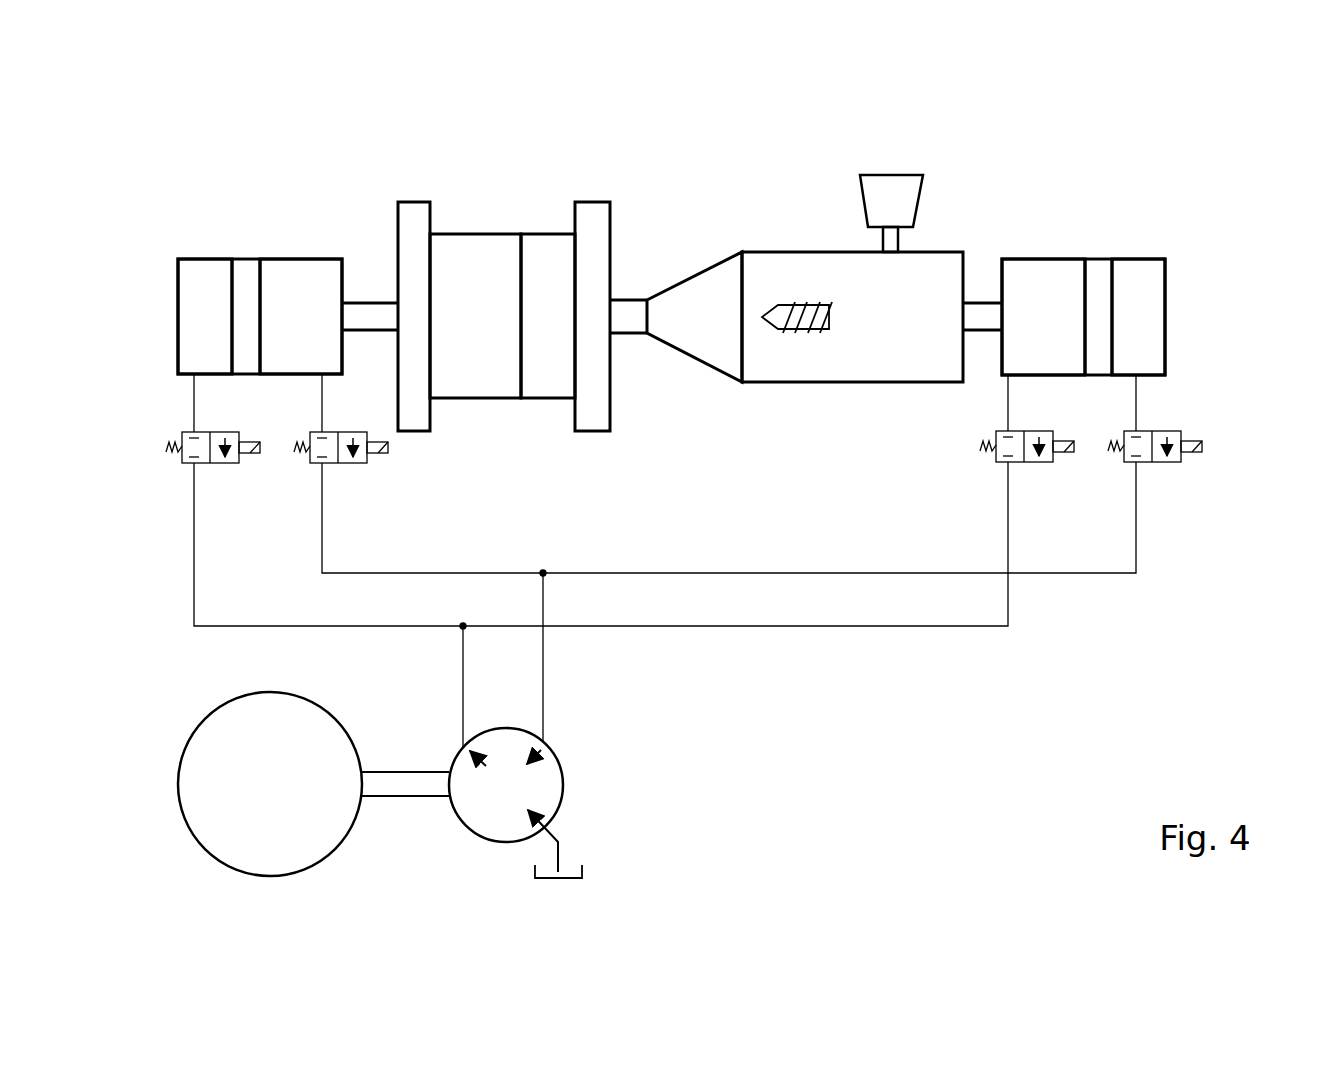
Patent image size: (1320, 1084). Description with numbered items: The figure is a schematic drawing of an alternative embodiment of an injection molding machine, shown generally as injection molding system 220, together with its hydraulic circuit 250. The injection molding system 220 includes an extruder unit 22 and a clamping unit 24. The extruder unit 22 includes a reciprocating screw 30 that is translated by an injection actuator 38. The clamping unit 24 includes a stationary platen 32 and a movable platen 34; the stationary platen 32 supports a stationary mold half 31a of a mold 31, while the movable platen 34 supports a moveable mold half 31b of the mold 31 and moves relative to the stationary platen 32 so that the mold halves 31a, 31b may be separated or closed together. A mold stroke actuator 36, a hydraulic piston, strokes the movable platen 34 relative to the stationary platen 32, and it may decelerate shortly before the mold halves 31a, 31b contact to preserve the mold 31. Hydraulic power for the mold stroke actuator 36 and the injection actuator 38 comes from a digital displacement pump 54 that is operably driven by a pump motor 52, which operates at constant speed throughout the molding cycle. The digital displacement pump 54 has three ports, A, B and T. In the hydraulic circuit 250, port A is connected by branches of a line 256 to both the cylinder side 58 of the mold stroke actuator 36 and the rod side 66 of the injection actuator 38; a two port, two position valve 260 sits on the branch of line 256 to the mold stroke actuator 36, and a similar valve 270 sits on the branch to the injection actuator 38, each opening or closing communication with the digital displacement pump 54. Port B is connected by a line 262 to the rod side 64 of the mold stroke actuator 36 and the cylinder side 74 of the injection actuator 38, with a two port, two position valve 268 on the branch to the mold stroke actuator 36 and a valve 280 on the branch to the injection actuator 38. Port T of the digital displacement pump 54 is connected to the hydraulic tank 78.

The injection molding system 220 is at (204, 168).
The clamping unit 24 is at (397, 163).
The mold 31 is at (530, 186).
The stationary mold half 31a is at (547, 233).
The moveable mold half 31b is at (463, 231).
The extruder unit 22 is at (755, 219).
The mold stroke actuator 36 is at (244, 257).
The cylinder side of mold stroke actuator 58 is at (236, 346).
The rod side of mold stroke actuator 64 is at (326, 369).
The movable platen 34 is at (433, 422).
The stationary platen 32 is at (612, 412).
The reciprocating screw 30 is at (812, 332).
The injection actuator 38 is at (1096, 257).
The rod side of injection actuator 66 is at (1049, 367).
The cylinder side of injection actuator 74 is at (1157, 367).
The valve 260 is at (193, 466).
The valve 268 is at (316, 466).
The valve 270 is at (1003, 465).
The valve 280 is at (1130, 465).
The line 256 is at (193, 598).
The line 262 is at (449, 573).
The pump motor 52 is at (206, 721).
The digital displacement pump 54 is at (471, 837).
The hydraulic tank 78 is at (598, 881).
The hydraulic circuit 250 is at (1103, 699).